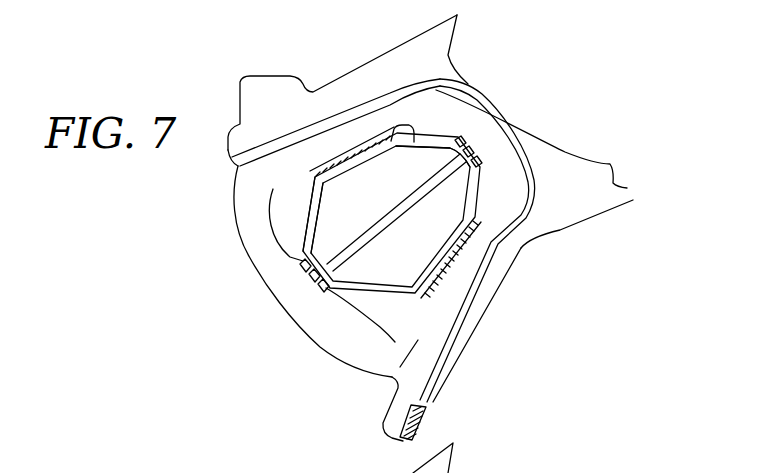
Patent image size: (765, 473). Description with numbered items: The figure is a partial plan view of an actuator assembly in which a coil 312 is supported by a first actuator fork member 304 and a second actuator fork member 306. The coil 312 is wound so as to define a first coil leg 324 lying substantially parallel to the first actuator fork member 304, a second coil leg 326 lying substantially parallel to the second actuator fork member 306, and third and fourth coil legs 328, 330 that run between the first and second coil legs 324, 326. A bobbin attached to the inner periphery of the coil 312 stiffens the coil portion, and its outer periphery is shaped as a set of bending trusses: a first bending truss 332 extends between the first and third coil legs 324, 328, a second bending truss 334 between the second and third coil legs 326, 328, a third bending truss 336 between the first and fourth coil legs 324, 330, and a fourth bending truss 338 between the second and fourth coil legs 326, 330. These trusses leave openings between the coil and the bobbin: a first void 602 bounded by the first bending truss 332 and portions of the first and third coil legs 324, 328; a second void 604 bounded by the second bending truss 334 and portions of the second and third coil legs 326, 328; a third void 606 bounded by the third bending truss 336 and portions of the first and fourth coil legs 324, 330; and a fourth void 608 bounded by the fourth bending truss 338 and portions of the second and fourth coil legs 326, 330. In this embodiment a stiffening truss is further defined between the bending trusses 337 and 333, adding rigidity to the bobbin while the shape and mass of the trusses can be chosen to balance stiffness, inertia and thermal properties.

The first actuator fork member 304 is at (477, 333).
The second actuator fork member 306 is at (380, 72).
The coil 312 is at (298, 303).
The first coil leg 324 is at (470, 268).
The second coil leg 326 is at (357, 127).
The third coil leg 328 is at (292, 271).
The fourth coil leg 330 is at (477, 123).
The first bending truss 332 is at (392, 297).
The bending truss 333 is at (330, 273).
The second bending truss 334 is at (315, 197).
The third bending truss 336 is at (477, 207).
The bending truss 337 is at (438, 163).
The fourth bending truss 338 is at (413, 137).
The first void 602 is at (372, 307).
The second void 604 is at (297, 214).
The third void 606 is at (482, 196).
The fourth void 608 is at (435, 130).